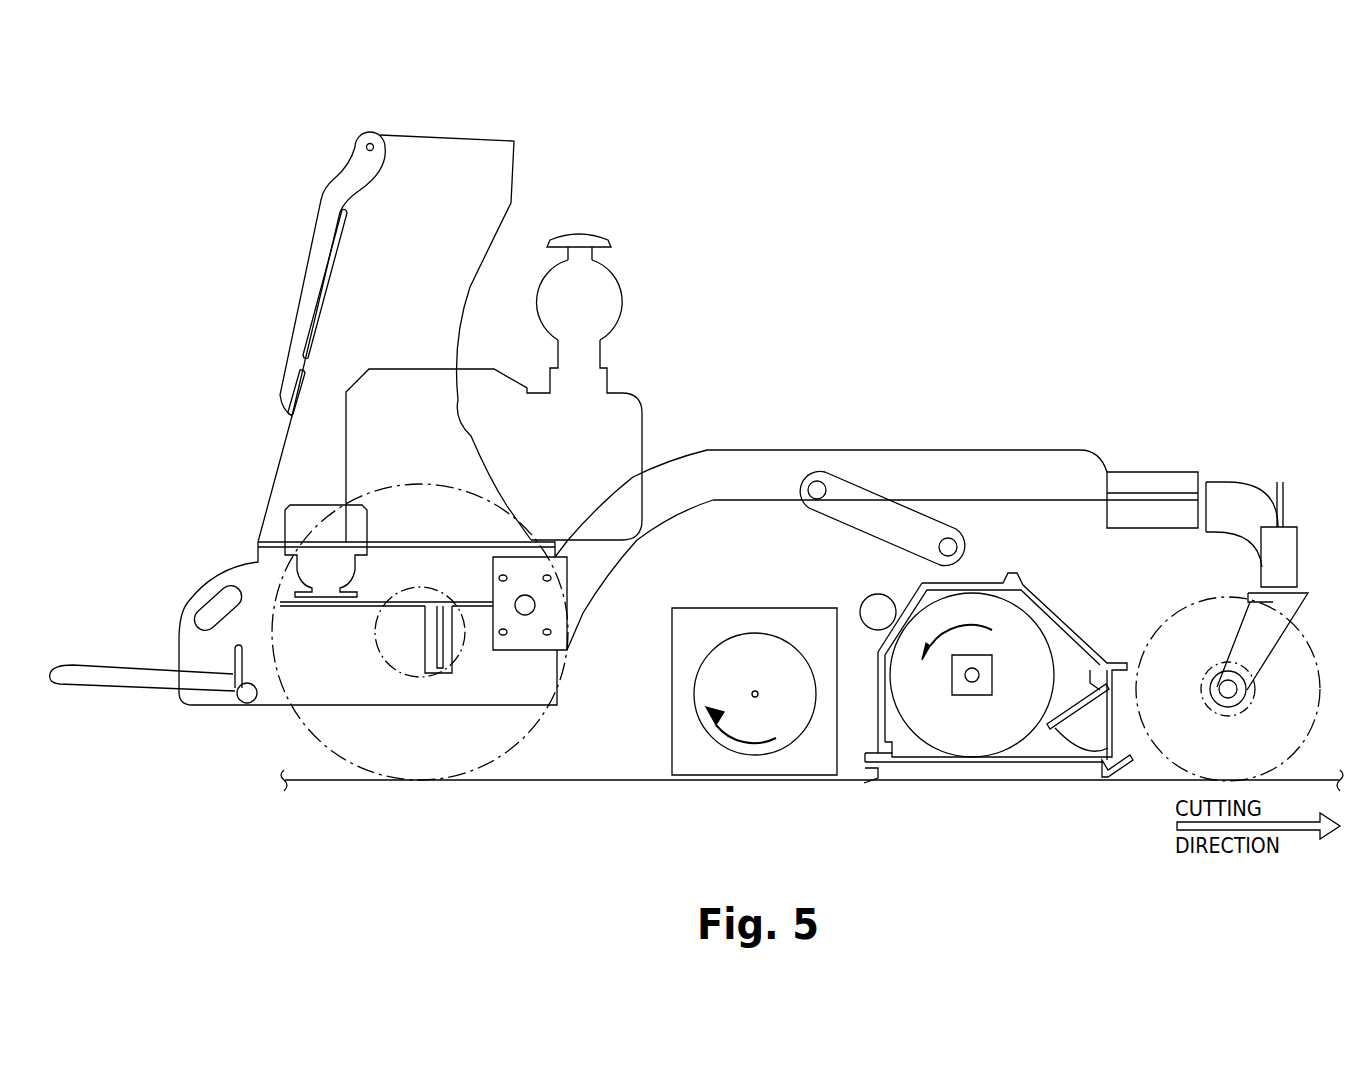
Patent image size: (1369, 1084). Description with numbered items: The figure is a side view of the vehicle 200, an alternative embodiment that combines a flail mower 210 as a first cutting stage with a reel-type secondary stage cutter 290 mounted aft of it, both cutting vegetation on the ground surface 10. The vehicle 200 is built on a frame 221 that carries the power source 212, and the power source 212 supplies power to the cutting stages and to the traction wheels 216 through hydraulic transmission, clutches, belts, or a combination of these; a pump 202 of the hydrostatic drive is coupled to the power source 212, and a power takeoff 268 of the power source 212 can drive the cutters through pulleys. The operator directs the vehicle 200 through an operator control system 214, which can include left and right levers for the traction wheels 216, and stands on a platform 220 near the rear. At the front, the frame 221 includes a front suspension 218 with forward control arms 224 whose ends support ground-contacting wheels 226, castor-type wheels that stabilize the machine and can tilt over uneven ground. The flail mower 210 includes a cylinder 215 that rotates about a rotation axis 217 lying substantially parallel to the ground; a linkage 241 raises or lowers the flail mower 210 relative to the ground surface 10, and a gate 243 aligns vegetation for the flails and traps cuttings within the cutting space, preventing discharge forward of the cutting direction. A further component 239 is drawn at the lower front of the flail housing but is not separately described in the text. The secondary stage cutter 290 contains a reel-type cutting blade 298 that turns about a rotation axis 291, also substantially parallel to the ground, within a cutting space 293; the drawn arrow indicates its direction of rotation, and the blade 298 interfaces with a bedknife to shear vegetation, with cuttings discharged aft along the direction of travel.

The ground surface 10 is at (315, 785).
The vehicle 200 is at (243, 140).
The pump 202 is at (303, 504).
The flail mower 210 is at (1042, 612).
The power source 212 is at (625, 307).
The operator control system 214 is at (355, 147).
The cylinder 215 is at (913, 733).
The traction wheels 216 is at (300, 722).
The rotation axis 217 is at (972, 682).
The front suspension 218 is at (1165, 420).
The platform 220 is at (125, 668).
The frame 221 is at (747, 450).
The forward control arms 224 is at (1283, 527).
The ground-contacting wheels 226 is at (1172, 762).
The skid plate 239 is at (868, 778).
The linkage 241 is at (865, 487).
The gate 243 is at (1070, 707).
The power takeoff 268 is at (427, 643).
The secondary stage cutter 290 is at (733, 607).
The rotation axis 291 is at (787, 668).
The cutting space 293 is at (792, 767).
The reel-type cutting blade 298 is at (740, 752).